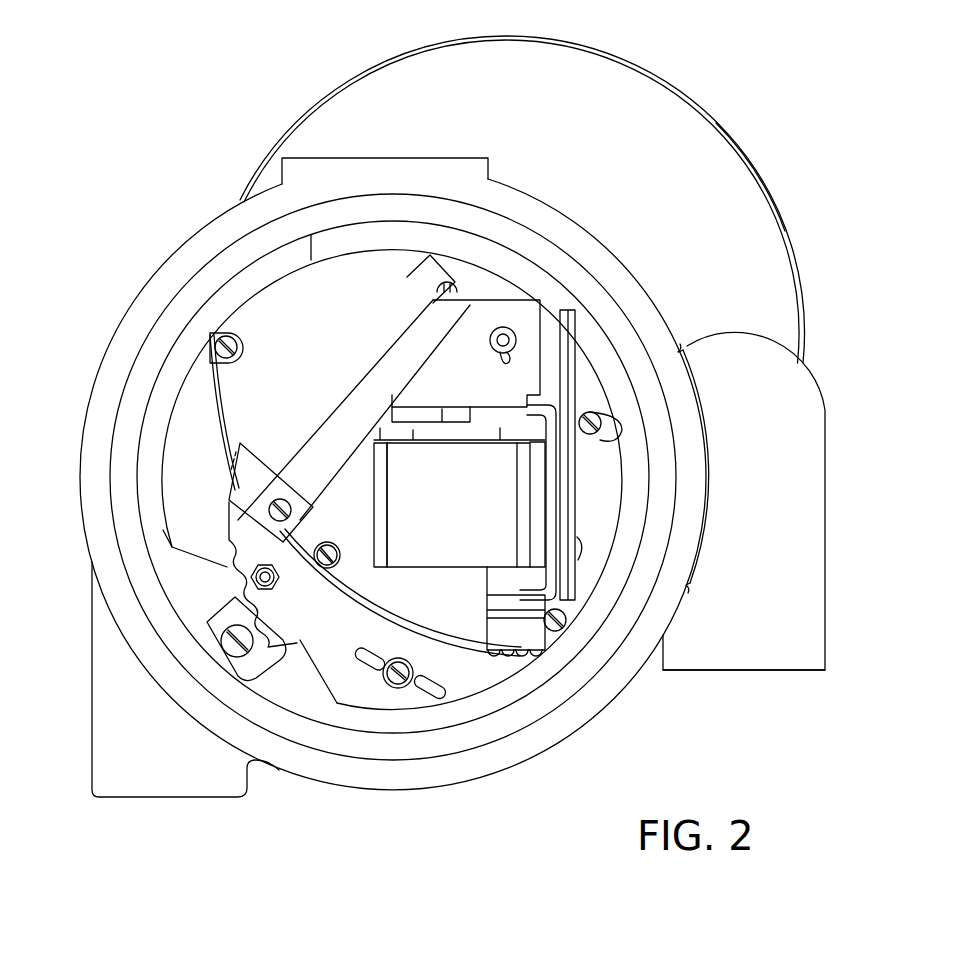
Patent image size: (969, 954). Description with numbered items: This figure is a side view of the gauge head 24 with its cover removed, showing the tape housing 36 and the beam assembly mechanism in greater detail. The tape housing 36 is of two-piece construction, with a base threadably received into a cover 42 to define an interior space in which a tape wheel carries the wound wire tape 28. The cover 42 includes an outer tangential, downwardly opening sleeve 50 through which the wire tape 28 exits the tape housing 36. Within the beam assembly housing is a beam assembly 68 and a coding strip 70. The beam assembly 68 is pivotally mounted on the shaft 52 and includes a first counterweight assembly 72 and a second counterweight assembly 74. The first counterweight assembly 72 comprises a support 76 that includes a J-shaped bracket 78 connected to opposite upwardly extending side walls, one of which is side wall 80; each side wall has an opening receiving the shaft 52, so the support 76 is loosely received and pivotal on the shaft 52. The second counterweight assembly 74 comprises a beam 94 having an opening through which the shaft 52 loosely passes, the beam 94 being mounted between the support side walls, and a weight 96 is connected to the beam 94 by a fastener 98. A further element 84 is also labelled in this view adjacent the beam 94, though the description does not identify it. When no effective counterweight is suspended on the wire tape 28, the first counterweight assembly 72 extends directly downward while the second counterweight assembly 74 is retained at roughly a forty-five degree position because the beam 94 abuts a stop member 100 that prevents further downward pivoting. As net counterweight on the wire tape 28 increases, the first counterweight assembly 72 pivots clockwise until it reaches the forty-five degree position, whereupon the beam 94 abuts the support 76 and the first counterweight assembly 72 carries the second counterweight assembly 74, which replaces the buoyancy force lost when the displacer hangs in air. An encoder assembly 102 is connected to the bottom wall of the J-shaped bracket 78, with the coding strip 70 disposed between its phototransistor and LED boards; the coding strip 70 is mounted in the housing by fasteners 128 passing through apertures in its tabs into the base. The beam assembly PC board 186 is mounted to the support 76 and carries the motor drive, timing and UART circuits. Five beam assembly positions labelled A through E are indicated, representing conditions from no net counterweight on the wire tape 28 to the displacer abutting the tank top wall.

The gauge head 24 is at (710, 77).
The cover 42 is at (725, 168).
The tape housing 36 is at (786, 212).
The sleeve 50 is at (826, 622).
The wire tape 28 is at (753, 671).
The weight 96 is at (230, 497).
The fastener 98 is at (286, 495).
The stop member 100 is at (276, 591).
The second counterweight assembly 74 is at (310, 430).
The beam assembly 68 is at (367, 369).
The side wall 80 is at (527, 312).
The shaft 52 is at (512, 336).
The beam assembly PC board 186 is at (574, 368).
The support 76 is at (543, 578).
The J-shaped bracket 78 is at (550, 507).
The beam 94 is at (343, 453).
The block side 84 is at (415, 545).
The first counterweight assembly 72 is at (452, 574).
The encoder assembly 102 is at (482, 650).
The coding strip 70 is at (350, 600).
The fasteners 128 is at (241, 336).